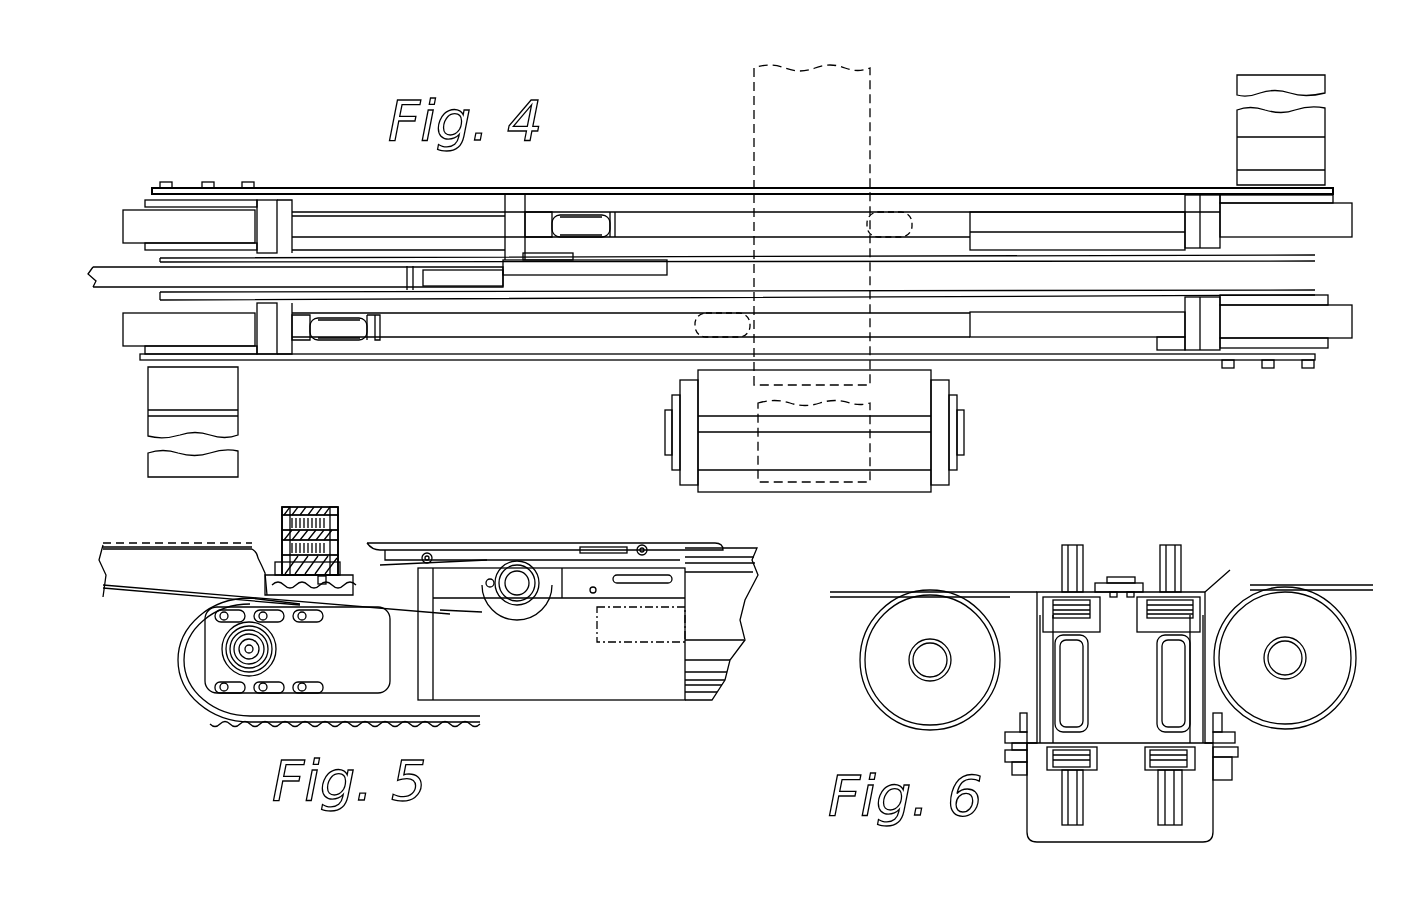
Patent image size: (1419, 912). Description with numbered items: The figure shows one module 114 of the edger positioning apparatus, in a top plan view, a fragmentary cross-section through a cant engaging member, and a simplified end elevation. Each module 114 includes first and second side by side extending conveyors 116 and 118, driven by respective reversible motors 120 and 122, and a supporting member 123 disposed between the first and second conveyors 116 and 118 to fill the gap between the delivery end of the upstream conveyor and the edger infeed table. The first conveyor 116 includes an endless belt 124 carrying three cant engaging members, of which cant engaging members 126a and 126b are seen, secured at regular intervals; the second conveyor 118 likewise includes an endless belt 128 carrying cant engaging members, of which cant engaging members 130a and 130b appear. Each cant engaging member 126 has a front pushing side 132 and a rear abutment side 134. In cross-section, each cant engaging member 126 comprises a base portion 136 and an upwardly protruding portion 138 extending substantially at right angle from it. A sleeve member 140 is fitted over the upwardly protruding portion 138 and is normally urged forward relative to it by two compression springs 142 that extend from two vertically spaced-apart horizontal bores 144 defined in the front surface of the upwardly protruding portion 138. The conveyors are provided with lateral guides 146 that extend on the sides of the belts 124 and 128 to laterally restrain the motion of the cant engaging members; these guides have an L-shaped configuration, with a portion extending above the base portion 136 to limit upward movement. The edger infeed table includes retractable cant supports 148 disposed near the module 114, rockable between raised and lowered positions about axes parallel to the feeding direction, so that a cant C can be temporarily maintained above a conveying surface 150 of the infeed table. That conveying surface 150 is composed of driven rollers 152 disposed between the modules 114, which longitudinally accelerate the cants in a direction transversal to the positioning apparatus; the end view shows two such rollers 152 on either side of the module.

In FIG. 4, the module 114 is at (255, 145).
In FIG. 4, the first conveyor 116 is at (285, 222).
In FIG. 5, the first conveyor 116 is at (455, 543).
In FIG. 6, the first conveyor 116 is at (1205, 576).
In FIG. 4, the second conveyor 118 is at (255, 332).
In FIG. 6, the second conveyor 118 is at (1037, 590).
In FIG. 4, the reversible motor 120 is at (1250, 125).
In FIG. 4, the reversible motor 122 is at (225, 428).
In FIG. 4, the supporting member 123 is at (579, 279).
In FIG. 4, the endless belt 124 is at (1107, 222).
In FIG. 5, the endless belt 124 is at (323, 570).
In FIG. 5, the cant engaging member 126 is at (342, 503).
In FIG. 4, the cant engaging member 126a is at (606, 214).
In FIG. 6, the cant engaging member 126a is at (1168, 544).
In FIG. 6, the cant engaging member 126b is at (1186, 805).
In FIG. 4, the endless belt 128 is at (1113, 318).
In FIG. 4, the cant engaging member 130a is at (342, 341).
In FIG. 6, the cant engaging member 130a is at (1070, 544).
In FIG. 6, the cant engaging member 130b is at (1058, 796).
In FIG. 4, the front pushing side 132 is at (615, 226).
In FIG. 5, the front pushing side 132 is at (342, 512).
In FIG. 4, the rear abutment side 134 is at (533, 223).
In FIG. 5, the rear abutment side 134 is at (282, 512).
In FIG. 5, the base portion 136 is at (310, 567).
In FIG. 5, the upwardly protruding portion 138 is at (286, 508).
In FIG. 5, the sleeve member 140 is at (312, 507).
In FIG. 5, the compression spring 142 is at (282, 547).
In FIG. 5, the horizontal bore 144 is at (338, 547).
In FIG. 4, the lateral guide 146 is at (923, 232).
In FIG. 5, the lateral guide 146 is at (445, 548).
In FIG. 6, the lateral guide 146 is at (1232, 592).
In FIG. 4, the retractable cant support 148 is at (680, 421).
In FIG. 6, the retractable cant support 148 is at (1230, 620).
In FIG. 6, the conveying surface 150 is at (985, 570).
In FIG. 4, the driven roller 152 is at (828, 455).
In FIG. 5, the driven roller 152 is at (715, 625).
In FIG. 6, the driven roller 152 is at (866, 664).
In FIG. 4, the carton C is at (870, 97).